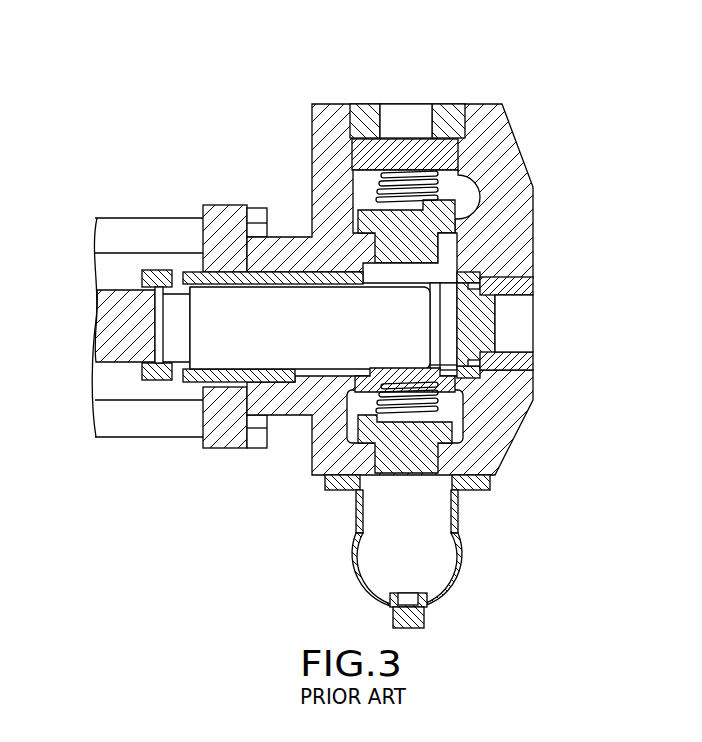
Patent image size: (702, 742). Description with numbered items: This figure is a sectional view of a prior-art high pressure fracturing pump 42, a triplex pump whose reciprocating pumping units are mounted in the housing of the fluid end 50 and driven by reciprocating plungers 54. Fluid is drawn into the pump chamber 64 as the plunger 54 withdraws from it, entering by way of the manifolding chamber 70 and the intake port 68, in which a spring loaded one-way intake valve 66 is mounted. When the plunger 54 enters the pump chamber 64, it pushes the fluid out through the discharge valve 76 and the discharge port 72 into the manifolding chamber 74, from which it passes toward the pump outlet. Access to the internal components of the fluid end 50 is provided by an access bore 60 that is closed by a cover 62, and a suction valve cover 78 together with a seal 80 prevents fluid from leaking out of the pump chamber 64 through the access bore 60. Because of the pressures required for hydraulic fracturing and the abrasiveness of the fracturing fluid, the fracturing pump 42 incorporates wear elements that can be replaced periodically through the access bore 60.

The high pressure fracturing pump 42 is at (170, 186).
The fluid end 50 is at (324, 98).
The plunger 54 is at (271, 340).
The access bore 60 is at (508, 284).
The cover 62 is at (518, 361).
The pump chamber 64 is at (447, 358).
The spring loaded one-way intake valve 66 is at (445, 430).
The intake port 68 is at (452, 460).
The manifolding chamber 70 is at (455, 577).
The discharge port 72 is at (447, 264).
The manifolding chamber 74 is at (468, 198).
The discharge valve 76 is at (448, 218).
The suction valve cover 78 is at (487, 322).
The seal 80 is at (434, 284).